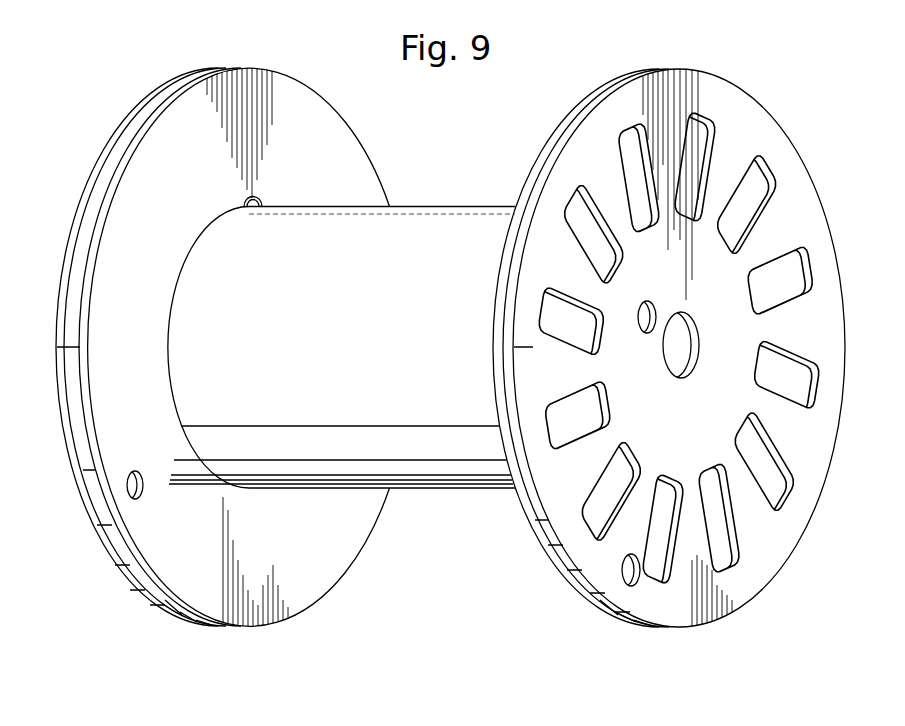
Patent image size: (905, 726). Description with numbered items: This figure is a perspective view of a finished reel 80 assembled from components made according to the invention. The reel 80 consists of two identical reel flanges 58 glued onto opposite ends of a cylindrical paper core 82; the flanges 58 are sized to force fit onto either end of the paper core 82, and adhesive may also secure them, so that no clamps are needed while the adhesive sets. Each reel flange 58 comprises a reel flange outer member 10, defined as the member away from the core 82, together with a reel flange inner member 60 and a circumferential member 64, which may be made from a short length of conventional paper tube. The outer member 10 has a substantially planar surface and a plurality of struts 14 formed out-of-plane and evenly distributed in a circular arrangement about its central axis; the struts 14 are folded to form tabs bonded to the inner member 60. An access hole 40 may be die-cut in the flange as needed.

The reel 80 is at (95, 565).
The reel flange outer member 10 is at (93, 165).
The reel flange inner member 60 is at (281, 96).
The circumferential member 64 is at (76, 470).
The reel flange 58 is at (222, 630).
The access hole 40 is at (130, 500).
The cylindrical paper core 82 is at (443, 206).
The strut 14 is at (797, 380).